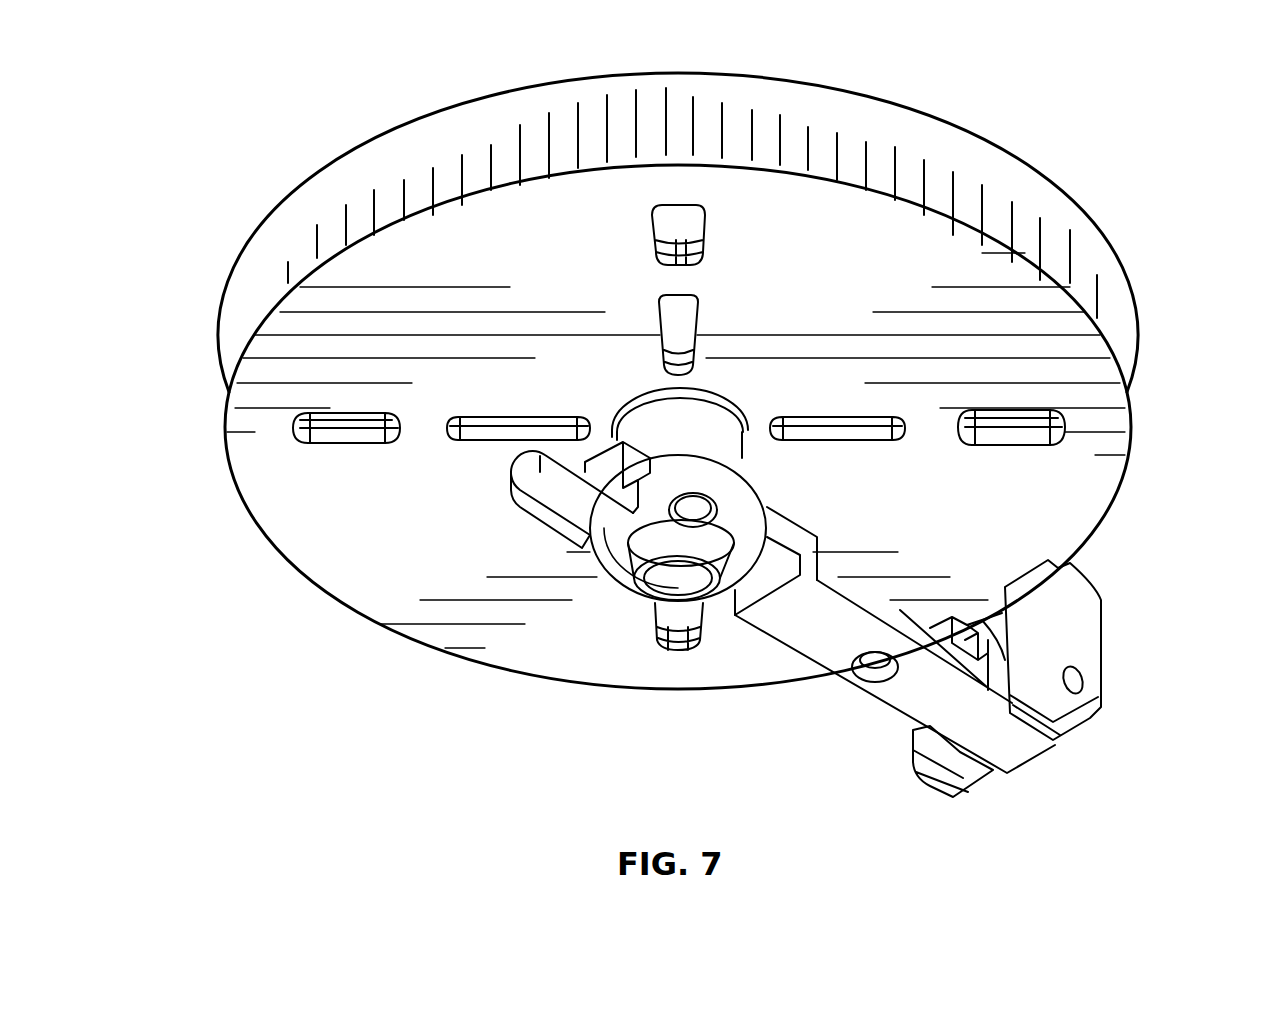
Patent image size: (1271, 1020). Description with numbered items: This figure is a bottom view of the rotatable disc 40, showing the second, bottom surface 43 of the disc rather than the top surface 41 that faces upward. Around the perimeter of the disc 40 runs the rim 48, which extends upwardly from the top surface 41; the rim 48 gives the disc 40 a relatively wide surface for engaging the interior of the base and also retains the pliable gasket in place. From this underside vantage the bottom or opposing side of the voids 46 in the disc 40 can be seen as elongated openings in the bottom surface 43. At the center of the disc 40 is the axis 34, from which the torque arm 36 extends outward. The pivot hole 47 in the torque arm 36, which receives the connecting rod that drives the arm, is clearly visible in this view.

The rotatable disc 40 is at (140, 168).
The top surface 41 is at (365, 85).
The bottom surface 43 is at (1070, 472).
The rim 48 is at (1088, 258).
The voids 46 is at (335, 445).
The axis 34 is at (645, 600).
The torque arm 36 is at (888, 722).
The pivot hole 47 is at (858, 682).